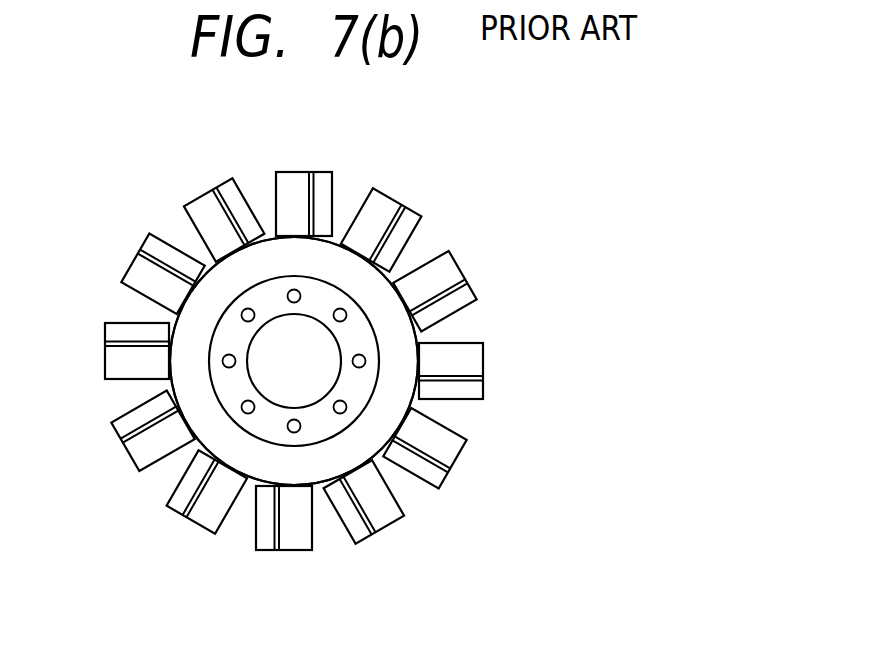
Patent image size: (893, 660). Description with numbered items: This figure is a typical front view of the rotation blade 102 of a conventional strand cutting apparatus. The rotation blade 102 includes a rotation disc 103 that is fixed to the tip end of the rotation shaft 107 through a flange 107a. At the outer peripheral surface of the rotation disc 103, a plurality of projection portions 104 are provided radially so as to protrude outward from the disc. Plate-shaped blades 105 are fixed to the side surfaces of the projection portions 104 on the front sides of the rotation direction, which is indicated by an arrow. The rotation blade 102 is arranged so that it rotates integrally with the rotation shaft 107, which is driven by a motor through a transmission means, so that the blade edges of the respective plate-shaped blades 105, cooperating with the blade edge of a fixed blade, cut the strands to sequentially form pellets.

The rotation blade 102 is at (343, 190).
The rotation disc 103 is at (402, 345).
The projection portions 104 is at (197, 200).
The plate-shaped blades 105 is at (231, 201).
The rotation shaft 107 is at (277, 395).
The flange 107a is at (355, 396).